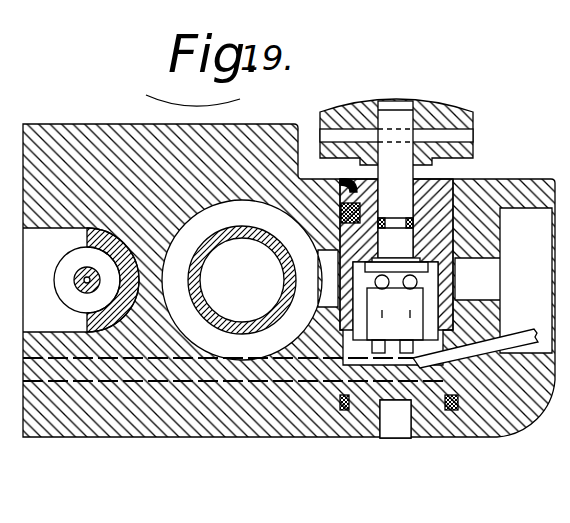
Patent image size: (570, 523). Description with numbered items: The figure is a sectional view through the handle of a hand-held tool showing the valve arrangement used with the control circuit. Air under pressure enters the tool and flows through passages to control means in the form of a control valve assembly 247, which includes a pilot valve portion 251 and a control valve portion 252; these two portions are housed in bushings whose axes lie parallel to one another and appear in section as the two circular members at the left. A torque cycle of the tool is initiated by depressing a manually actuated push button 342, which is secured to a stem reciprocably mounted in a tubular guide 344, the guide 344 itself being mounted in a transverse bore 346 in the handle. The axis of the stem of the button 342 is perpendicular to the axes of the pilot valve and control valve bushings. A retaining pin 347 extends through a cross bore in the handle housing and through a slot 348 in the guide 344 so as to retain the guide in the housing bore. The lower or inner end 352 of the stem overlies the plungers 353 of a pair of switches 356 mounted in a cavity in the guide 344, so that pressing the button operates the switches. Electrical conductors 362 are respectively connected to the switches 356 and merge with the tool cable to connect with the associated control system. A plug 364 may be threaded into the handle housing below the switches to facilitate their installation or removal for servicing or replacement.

The control valve assembly 247 is at (495, 63).
The pilot valve portion 251 is at (213, 201).
The control valve portion 252 is at (92, 222).
The push button 342 is at (360, 103).
The tubular guide 344 is at (420, 192).
The transverse bore 346 is at (343, 178).
The retaining pin 347 is at (338, 205).
The slot 348 is at (340, 212).
The lower or inner end of the stem 352 is at (440, 252).
The plungers 353 is at (386, 296).
The switches 356 is at (506, 302).
The electrical conductors 362 is at (392, 362).
The plug 364 is at (428, 422).